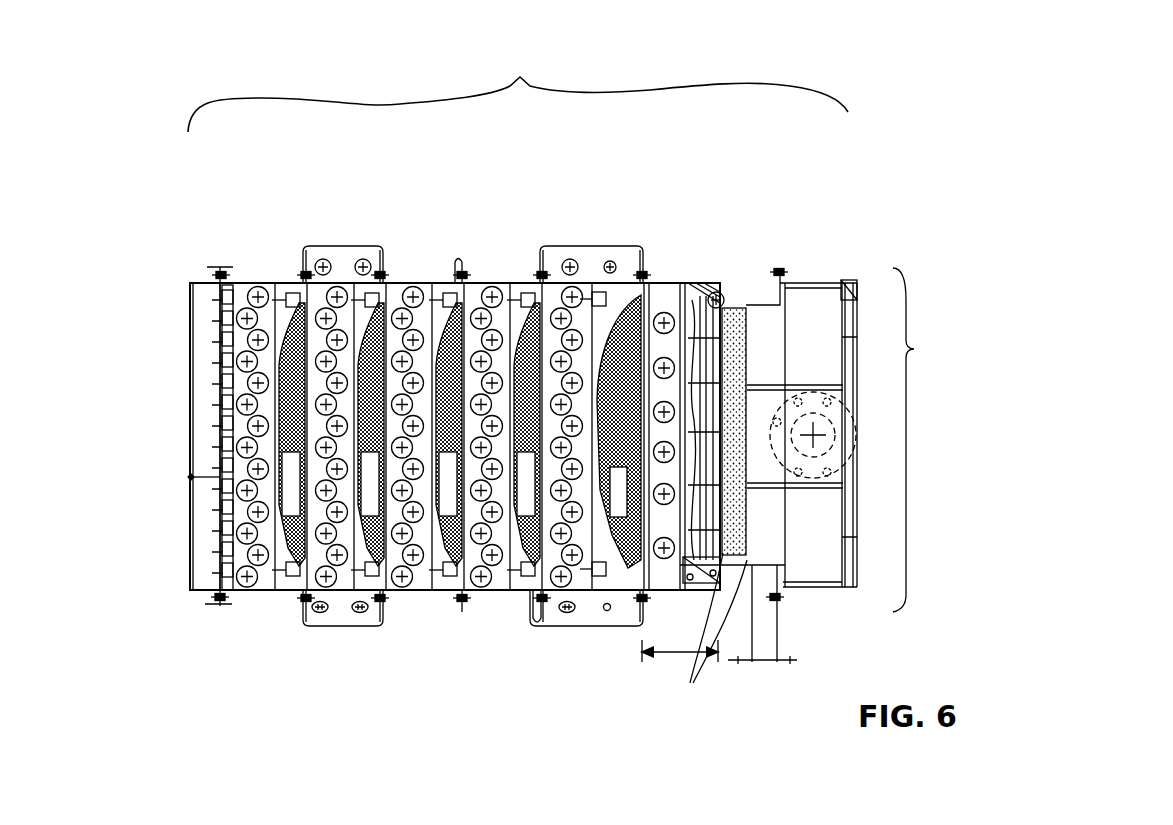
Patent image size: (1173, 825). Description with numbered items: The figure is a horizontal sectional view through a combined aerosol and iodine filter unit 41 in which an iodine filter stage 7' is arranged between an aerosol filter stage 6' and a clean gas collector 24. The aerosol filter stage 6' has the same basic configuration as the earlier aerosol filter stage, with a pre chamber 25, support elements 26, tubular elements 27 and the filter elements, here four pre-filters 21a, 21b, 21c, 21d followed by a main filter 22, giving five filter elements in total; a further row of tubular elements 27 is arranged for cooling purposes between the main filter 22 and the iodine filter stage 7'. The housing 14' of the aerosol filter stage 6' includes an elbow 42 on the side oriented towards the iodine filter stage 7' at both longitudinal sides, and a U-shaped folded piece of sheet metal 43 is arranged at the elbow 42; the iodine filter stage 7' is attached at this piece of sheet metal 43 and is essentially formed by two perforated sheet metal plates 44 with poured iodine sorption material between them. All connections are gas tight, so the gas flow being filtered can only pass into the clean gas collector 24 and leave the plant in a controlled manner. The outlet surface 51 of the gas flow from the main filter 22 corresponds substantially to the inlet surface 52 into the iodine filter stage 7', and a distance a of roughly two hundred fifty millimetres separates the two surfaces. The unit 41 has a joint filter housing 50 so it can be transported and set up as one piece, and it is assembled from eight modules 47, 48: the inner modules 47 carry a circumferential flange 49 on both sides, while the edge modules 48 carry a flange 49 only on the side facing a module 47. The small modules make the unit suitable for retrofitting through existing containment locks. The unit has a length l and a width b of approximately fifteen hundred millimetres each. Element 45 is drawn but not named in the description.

The housing 14' is at (402, 436).
The pre chamber 25 is at (203, 298).
The support elements 26 is at (232, 288).
The tubular elements 27 is at (255, 290).
The filter element 21a is at (292, 300).
The filter element 21b is at (372, 300).
The filter element 21c is at (452, 300).
The filter element 21d is at (534, 300).
The main filter 22 is at (622, 300).
The outlet surface 51 is at (691, 298).
The inlet surface 52 is at (703, 296).
The module 47 is at (322, 622).
The circumferential flange 49 is at (457, 270).
The elbow 42 is at (724, 305).
The hook bracket 45 is at (751, 300).
The U-shaped folded piece of sheet metal 43 is at (782, 280).
The combined aerosol and iodine filter unit 41 is at (921, 204).
The joint filter housing 50 is at (861, 270).
The clean gas collector 24 is at (823, 367).
The edge module 48 is at (205, 596).
The perforated sheet metal plate 44 is at (690, 683).
The aerosol filter stage 6' is at (546, 170).
The iodine filter stage 7' is at (755, 203).
The distance a is at (661, 660).
The width b is at (921, 440).
The length l is at (518, 80).